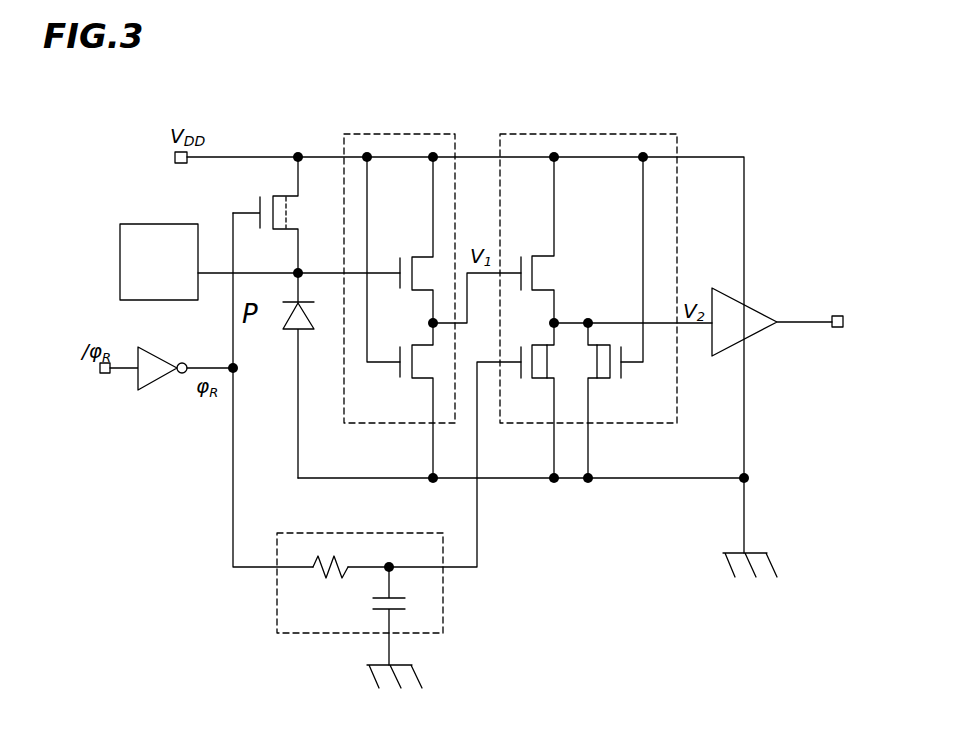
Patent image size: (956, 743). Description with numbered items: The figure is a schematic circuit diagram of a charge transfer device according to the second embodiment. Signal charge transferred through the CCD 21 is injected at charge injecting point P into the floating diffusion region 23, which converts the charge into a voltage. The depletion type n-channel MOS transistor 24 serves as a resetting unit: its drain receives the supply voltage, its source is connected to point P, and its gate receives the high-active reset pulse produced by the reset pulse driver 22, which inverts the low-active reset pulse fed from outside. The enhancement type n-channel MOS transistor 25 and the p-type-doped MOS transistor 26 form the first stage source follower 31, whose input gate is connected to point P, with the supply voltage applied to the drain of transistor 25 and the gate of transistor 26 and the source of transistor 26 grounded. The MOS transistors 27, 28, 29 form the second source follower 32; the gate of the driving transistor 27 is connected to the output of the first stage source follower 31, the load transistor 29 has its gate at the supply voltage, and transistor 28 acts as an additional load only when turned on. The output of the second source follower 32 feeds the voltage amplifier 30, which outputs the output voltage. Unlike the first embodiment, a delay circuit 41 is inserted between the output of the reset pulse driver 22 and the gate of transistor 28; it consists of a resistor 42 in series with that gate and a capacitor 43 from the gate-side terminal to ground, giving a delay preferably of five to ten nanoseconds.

The CCD 21 is at (135, 224).
The reset pulse driver 22 is at (140, 385).
The floating diffusion region 23 is at (290, 331).
The depletion type n-channel MOS transistor 24 is at (285, 195).
The enhancement type n-channel MOS transistor 25 is at (425, 257).
The enhancement type n-channel MOS transistor doped with p-type impurity 26 is at (426, 380).
The enhancement type n-channel MOS transistor doped with p-type impurity 27 is at (538, 273).
The enhancement type n-channel MOS transistor doped with p-type impurity 28 is at (546, 380).
The enhancement type n-channel MOS transistor doped with p-type impurity 29 is at (594, 380).
The voltage amplifier 30 is at (757, 305).
The first stage source follower 31 is at (362, 423).
The second source follower 32 is at (622, 134).
The delay circuit 41 is at (384, 635).
The resistor 42 is at (330, 579).
The capacitor 43 is at (405, 604).